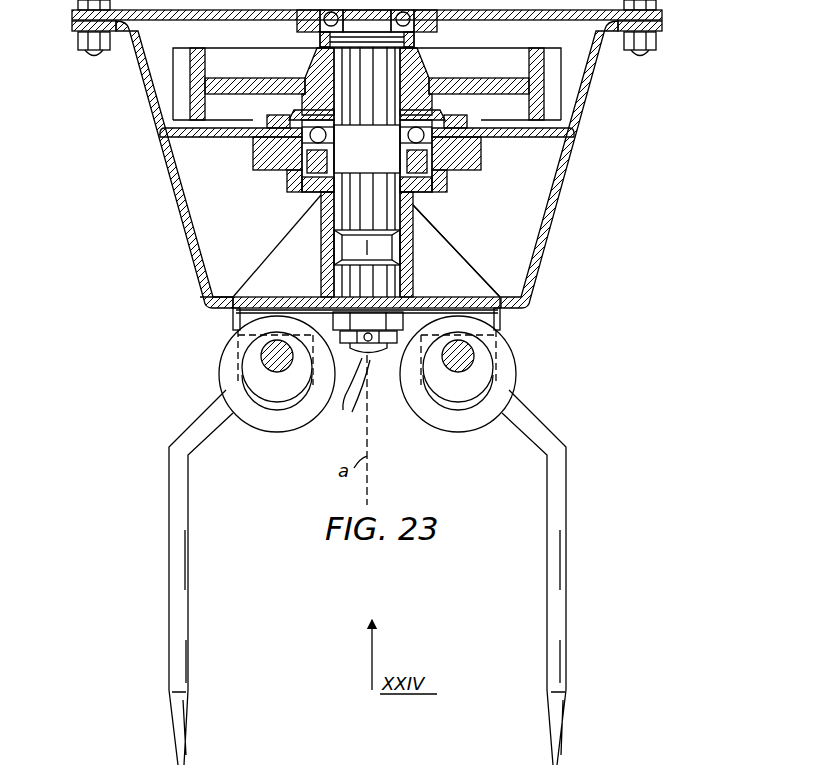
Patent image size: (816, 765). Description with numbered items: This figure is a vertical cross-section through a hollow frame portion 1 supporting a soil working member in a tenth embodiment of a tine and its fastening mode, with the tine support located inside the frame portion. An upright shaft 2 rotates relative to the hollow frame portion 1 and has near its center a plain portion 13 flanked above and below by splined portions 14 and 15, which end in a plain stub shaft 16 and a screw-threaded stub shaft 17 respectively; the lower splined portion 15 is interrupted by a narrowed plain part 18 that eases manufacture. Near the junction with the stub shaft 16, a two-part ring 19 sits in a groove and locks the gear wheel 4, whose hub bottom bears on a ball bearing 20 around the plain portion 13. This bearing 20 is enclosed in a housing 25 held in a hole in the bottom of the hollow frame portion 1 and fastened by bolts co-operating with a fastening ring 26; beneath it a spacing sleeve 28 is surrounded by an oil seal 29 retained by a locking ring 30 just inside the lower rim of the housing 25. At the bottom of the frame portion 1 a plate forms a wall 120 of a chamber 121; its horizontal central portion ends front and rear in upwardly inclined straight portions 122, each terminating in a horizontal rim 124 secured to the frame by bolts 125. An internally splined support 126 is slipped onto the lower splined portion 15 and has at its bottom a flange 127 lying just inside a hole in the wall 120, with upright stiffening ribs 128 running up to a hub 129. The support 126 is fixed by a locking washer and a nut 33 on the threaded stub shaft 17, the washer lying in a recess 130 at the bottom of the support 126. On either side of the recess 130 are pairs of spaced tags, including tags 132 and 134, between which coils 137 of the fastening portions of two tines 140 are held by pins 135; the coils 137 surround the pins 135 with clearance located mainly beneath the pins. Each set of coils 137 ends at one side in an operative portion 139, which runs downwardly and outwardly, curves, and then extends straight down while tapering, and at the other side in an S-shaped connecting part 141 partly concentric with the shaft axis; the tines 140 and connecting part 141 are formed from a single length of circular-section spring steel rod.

The hollow frame portion 1 is at (227, 140).
The upright shaft 2 is at (326, 70).
The gear wheel 4 is at (563, 52).
The plain portion 13 is at (367, 172).
The splined portion 14 is at (401, 70).
The splined portion 15 is at (311, 279).
The plain stub shaft 16 is at (367, 21).
The screw-threaded stub shaft 17 is at (363, 358).
The narrowed plain part 18 is at (337, 244).
The ring 19 is at (405, 42).
The ball bearing 20 is at (433, 111).
The housing 25 is at (483, 153).
The fastening ring 26 is at (470, 117).
The spacing sleeve 28 is at (302, 180).
The oil seal 29 is at (433, 160).
The locking ring 30 is at (305, 192).
The nut 33 is at (393, 358).
The wall 120 is at (578, 195).
The chamber 121 is at (526, 220).
The upwardly inclined portions 122 is at (563, 243).
The horizontal rim 124 is at (73, 40).
The bolts 125 is at (83, 58).
The support 126 is at (416, 220).
The flange 127 is at (232, 309).
The stiffening ribs 128 is at (458, 254).
The hub 129 is at (409, 256).
The recess 130 is at (430, 297).
The tag 132 is at (238, 324).
The tag 134 is at (500, 320).
The pins 135 is at (268, 369).
The coils 137 is at (262, 432).
The operative portion 139 is at (169, 515).
The tines 140 is at (166, 652).
The connecting part 141 is at (343, 412).